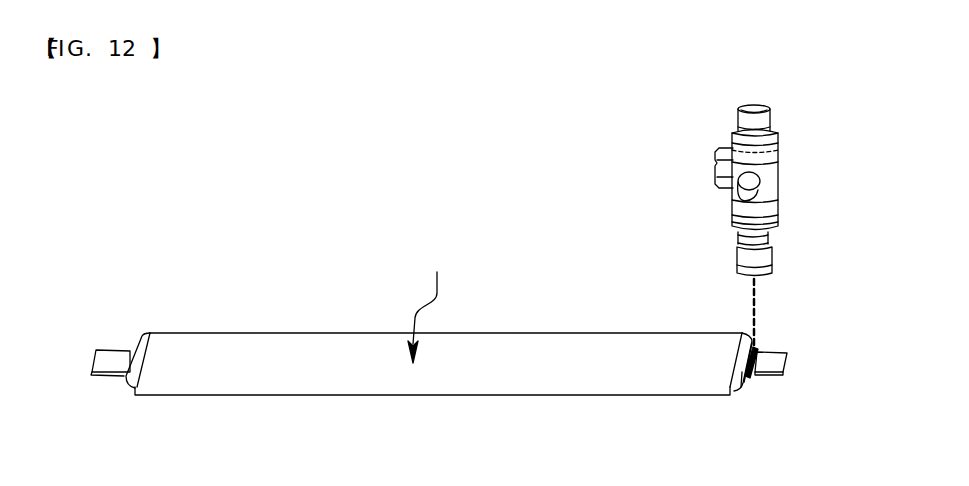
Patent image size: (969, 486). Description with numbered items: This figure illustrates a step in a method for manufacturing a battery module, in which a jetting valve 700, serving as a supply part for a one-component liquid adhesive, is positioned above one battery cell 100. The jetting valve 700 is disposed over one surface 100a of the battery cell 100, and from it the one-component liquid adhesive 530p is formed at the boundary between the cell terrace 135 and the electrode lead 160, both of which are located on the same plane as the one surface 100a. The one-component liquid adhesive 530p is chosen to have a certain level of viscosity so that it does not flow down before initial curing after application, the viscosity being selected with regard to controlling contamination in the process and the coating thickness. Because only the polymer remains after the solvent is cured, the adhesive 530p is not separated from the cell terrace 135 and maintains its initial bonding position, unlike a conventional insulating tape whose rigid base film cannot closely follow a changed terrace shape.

The battery cell 100 is at (338, 370).
The one surface of the battery cell 100a is at (435, 304).
The cell terrace 135 is at (740, 390).
The electrode lead 160 is at (775, 357).
The one-component liquid adhesive 530p is at (758, 362).
The jetting valve 700 is at (773, 173).